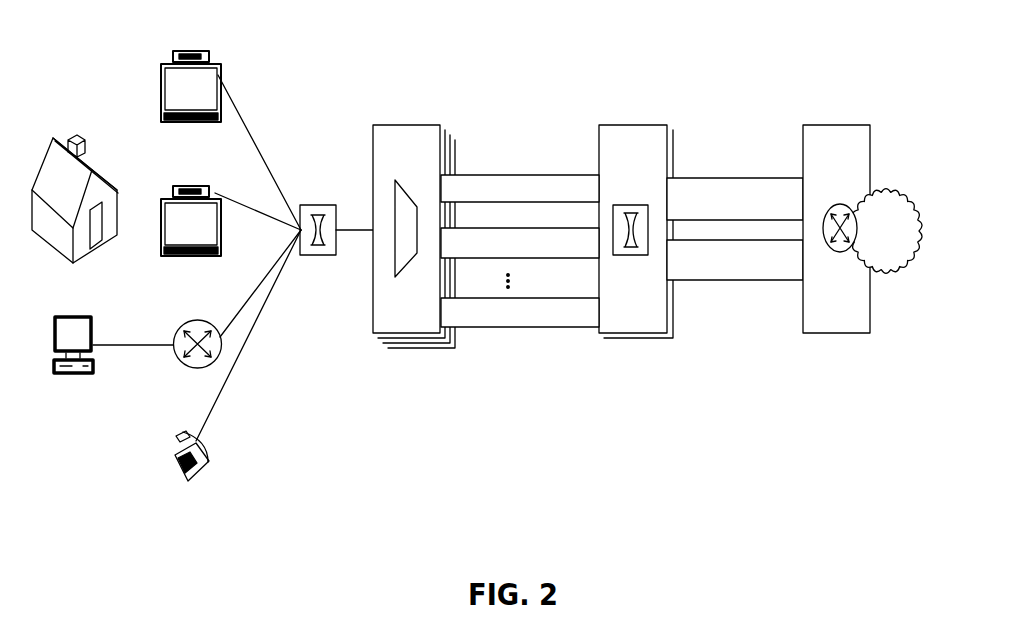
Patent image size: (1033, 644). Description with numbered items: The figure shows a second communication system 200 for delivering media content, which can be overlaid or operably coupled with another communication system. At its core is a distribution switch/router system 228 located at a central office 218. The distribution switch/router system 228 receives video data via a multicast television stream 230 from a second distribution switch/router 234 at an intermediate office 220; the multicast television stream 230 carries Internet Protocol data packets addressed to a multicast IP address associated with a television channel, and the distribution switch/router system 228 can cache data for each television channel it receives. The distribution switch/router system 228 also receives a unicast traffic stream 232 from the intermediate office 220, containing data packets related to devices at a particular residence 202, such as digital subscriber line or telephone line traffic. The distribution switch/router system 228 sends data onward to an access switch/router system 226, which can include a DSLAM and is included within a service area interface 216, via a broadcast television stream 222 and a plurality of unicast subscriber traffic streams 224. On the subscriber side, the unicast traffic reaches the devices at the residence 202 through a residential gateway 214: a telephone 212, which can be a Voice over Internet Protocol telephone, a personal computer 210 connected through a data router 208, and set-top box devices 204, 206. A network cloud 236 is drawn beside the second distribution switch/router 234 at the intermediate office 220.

The communication system 200 is at (490, 292).
The residence 202 is at (55, 137).
The set-top box device 204 is at (192, 50).
The set-top box device 206 is at (192, 185).
The data router 208 is at (197, 320).
The personal computer 210 is at (72, 375).
The telephone 212 is at (174, 475).
The residential gateway 214 is at (318, 256).
The service area interface 216 is at (438, 218).
The central office 218 is at (665, 208).
The intermediate office 220 is at (875, 197).
The broadcast television (BTV) stream 222 is at (570, 174).
The unicast subscriber traffic streams 224 is at (523, 259).
The access switch/router system 226 is at (406, 268).
The distribution switch/router system 228 is at (632, 255).
The multicast television stream 230 is at (770, 177).
The unicast traffic stream 232 is at (712, 281).
The second distribution switch/router 234 is at (840, 252).
The network cloud 236 is at (882, 192).